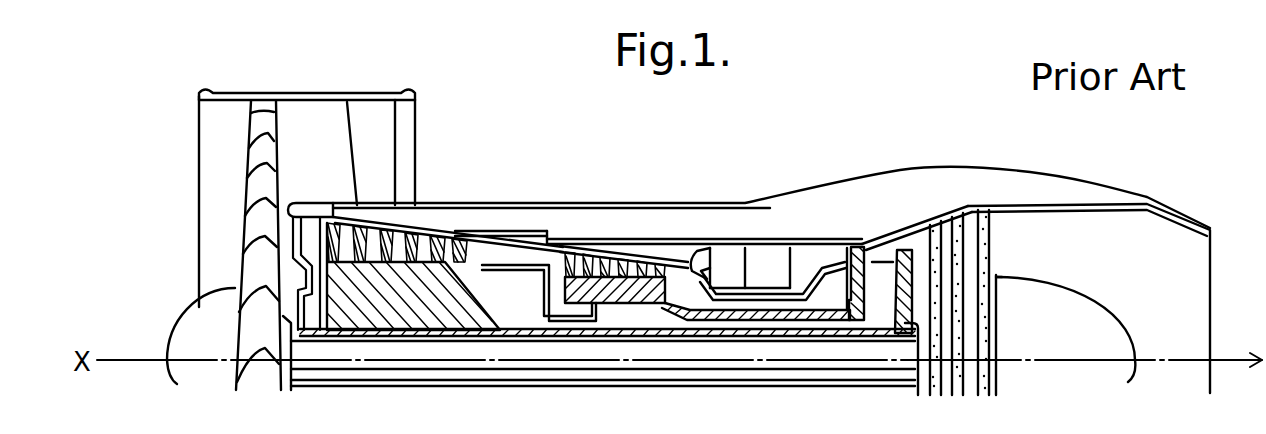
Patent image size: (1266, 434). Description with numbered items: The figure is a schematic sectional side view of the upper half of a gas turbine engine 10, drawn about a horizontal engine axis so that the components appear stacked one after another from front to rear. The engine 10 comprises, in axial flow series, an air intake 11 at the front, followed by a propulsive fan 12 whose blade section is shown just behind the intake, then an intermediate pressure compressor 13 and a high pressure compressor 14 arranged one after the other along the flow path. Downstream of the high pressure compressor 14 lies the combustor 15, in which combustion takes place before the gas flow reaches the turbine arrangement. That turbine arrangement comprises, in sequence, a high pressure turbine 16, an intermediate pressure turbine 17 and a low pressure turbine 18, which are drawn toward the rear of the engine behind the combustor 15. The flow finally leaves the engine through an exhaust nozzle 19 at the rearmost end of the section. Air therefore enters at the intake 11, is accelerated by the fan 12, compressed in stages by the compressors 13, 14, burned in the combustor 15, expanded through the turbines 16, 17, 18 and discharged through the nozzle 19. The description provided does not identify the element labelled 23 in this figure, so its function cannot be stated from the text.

The gas turbine engine 10 is at (564, 165).
The air intake 11 is at (184, 210).
The propulsive fan 12 is at (265, 128).
The intermediate pressure compressor 13 is at (407, 283).
The high pressure compressor 14 is at (621, 258).
The combustor 15 is at (777, 228).
The high pressure turbine 16 is at (857, 240).
The intermediate pressure turbine 17 is at (905, 240).
The low pressure turbine 18 is at (962, 250).
The exhaust nozzle 19 is at (1190, 311).
The labyrinth seal 23 is at (728, 240).